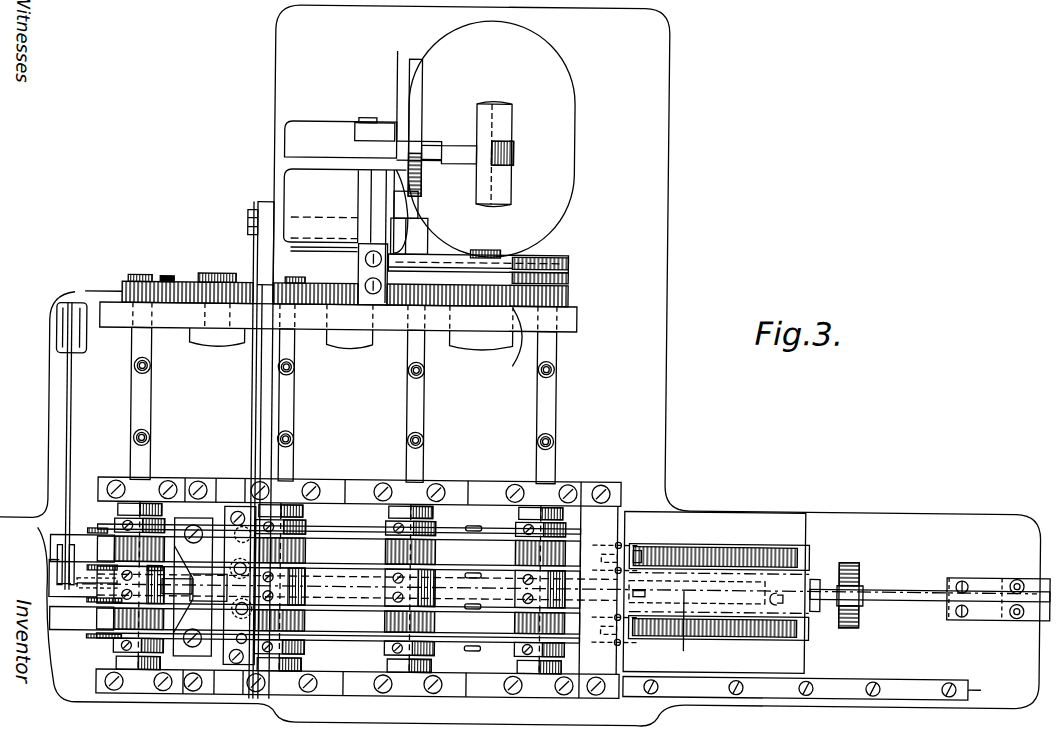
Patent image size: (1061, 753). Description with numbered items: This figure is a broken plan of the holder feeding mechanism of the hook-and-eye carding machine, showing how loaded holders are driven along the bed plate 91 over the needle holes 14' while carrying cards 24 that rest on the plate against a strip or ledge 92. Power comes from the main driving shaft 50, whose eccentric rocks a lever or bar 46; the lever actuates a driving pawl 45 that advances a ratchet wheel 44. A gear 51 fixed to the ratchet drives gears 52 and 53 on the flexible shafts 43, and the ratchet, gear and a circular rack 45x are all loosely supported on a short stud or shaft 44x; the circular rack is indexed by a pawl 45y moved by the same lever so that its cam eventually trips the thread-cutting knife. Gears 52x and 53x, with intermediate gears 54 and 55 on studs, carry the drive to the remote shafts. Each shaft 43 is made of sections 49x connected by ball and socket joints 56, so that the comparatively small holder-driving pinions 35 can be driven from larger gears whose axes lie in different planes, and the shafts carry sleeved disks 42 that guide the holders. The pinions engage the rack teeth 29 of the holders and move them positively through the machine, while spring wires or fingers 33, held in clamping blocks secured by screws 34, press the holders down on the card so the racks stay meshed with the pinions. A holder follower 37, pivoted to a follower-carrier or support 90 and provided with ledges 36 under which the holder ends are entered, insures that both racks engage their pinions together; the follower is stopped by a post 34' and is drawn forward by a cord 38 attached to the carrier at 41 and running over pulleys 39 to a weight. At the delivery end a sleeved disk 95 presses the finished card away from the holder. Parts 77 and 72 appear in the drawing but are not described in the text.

The lever or bar 46 is at (353, 124).
The main driving shaft 50 is at (492, 176).
The driving pawl 45 is at (462, 236).
The pawl 45y is at (487, 244).
The circular rack 45x is at (568, 260).
The ratchet wheel 44 is at (568, 273).
The gear or pinion 52 is at (568, 293).
The gear 53x is at (138, 270).
The intermediate gear 55 is at (212, 281).
The gear 52x is at (308, 281).
The intermediate gear 54 is at (347, 302).
The gear 53 is at (420, 302).
The stud or shaft 44x is at (470, 347).
The gear 51 is at (523, 355).
The shaft 43 is at (343, 405).
The shaft section 49x is at (152, 362).
The ball and socket joint 56 is at (152, 372).
The holder-driving pinion 35 is at (518, 620).
The sleeved disk 42 is at (308, 531).
The needle hole 14' is at (473, 588).
The spring wire or finger 33 is at (613, 595).
The pulley 39 is at (57, 340).
The sleeve or sleeved disk 95 is at (100, 640).
The plate 77 is at (193, 587).
The block 72 is at (238, 505).
The card 24 is at (714, 594).
The ledge 36 is at (803, 556).
The rack teeth 29 is at (775, 545).
The screw 34 is at (648, 543).
The post 34' is at (672, 560).
The cord 38 is at (691, 630).
The cord attachment 41 is at (787, 592).
The holder follower 37 is at (816, 566).
The follower-carrier or support 90 is at (866, 582).
The bed plate 91 is at (787, 561).
The strip or ledge 92 is at (985, 691).